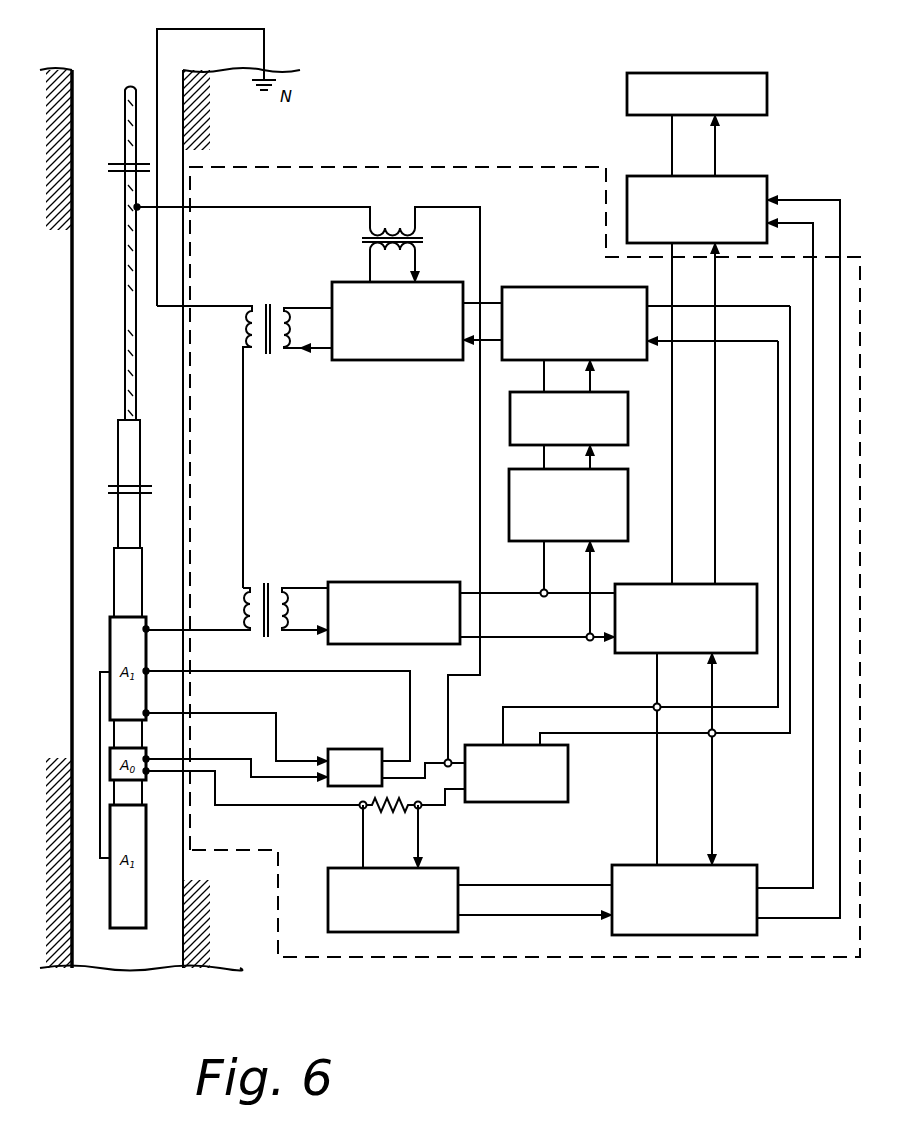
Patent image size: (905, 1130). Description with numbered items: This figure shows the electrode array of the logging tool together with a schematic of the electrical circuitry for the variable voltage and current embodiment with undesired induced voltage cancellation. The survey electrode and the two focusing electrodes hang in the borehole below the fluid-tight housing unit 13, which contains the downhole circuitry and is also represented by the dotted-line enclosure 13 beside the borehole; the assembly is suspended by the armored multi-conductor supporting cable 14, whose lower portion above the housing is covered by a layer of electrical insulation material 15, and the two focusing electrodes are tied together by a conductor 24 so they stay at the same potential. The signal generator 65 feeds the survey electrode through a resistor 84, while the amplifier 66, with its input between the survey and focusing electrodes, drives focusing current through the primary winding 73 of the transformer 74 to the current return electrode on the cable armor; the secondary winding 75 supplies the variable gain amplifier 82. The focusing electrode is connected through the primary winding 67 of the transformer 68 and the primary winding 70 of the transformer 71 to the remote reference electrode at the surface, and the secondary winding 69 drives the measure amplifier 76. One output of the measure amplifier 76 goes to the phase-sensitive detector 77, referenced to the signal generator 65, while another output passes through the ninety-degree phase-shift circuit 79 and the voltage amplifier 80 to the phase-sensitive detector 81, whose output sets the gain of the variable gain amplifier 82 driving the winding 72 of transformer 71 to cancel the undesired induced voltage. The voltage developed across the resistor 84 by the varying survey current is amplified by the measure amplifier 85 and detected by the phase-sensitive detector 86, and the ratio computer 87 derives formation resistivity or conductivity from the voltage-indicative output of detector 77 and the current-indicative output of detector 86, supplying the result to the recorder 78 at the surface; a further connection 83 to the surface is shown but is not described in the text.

The fluid-tight housing unit 13 is at (114, 576).
The armored multi-conductor supporting cable 14 is at (124, 318).
The layer of electrical insulation material 15 is at (118, 444).
The conductor 24 is at (100, 762).
The signal generator 65 is at (570, 786).
The amplifier 66 is at (356, 749).
The primary winding 67 is at (250, 632).
The transformer 68 is at (270, 583).
The secondary winding 69 is at (285, 610).
The primary winding 70 is at (248, 326).
The transformer 71 is at (268, 304).
The primary winding 72 is at (288, 322).
The primary winding 73 is at (395, 224).
The transformer 74 is at (423, 240).
The secondary winding 75 is at (410, 256).
The measure amplifier 76 is at (394, 582).
The phase-sensitive detector 77 is at (727, 584).
The recorder 78 is at (767, 95).
The 90° phase-shift circuit 79 is at (630, 506).
The voltage amplifier 80 is at (630, 416).
The phase-sensitive detector 81 is at (572, 287).
The variable gain amplifier 82 is at (345, 282).
The ground return cable 83 is at (157, 40).
The resistor 84 is at (392, 812).
The measure amplifier 85 is at (445, 868).
The phase-sensitive detector 86 is at (748, 865).
The ratio computer 87 is at (765, 178).